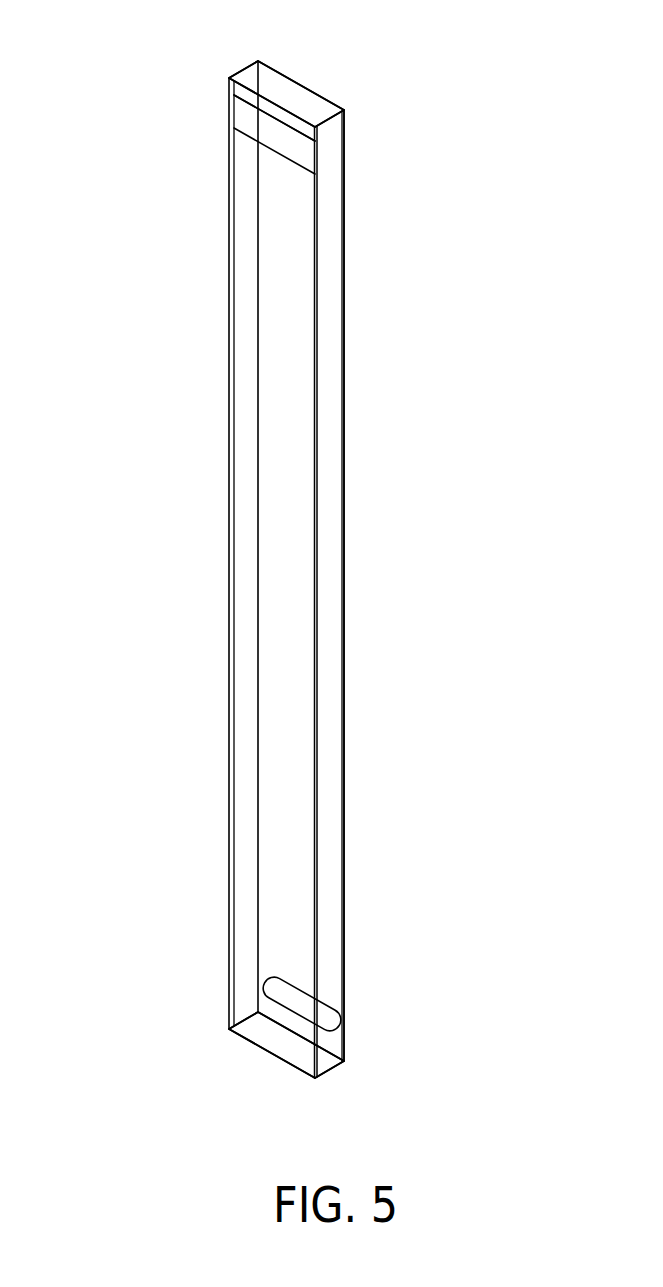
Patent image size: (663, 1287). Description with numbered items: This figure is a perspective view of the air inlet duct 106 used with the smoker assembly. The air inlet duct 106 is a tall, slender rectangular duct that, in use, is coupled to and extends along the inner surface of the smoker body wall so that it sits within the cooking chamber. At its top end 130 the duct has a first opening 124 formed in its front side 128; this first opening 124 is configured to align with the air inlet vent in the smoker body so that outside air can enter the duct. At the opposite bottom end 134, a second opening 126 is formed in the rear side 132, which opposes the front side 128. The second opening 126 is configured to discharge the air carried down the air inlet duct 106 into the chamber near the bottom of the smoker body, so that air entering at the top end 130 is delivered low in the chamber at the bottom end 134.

The air inlet duct 106 is at (150, 85).
The first opening 124 is at (242, 132).
The second opening 126 is at (333, 1000).
The front side 128 is at (242, 200).
The top end 130 is at (363, 123).
The rear side 132 is at (345, 843).
The bottom end 134 is at (202, 1018).